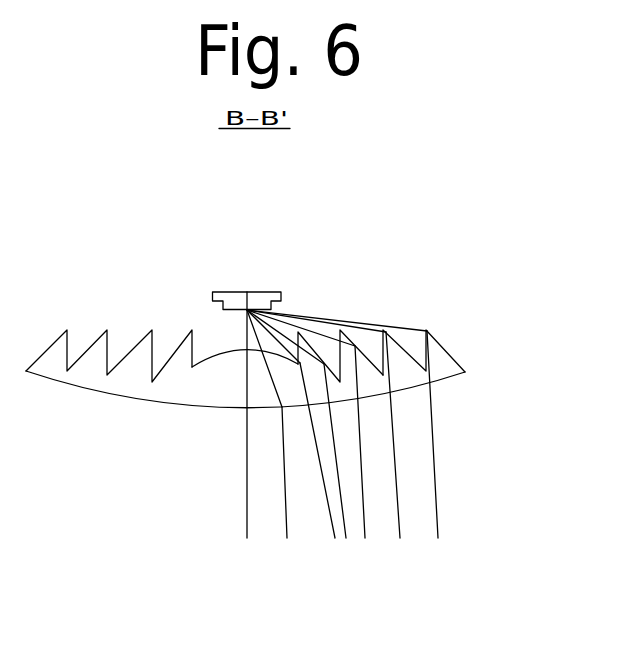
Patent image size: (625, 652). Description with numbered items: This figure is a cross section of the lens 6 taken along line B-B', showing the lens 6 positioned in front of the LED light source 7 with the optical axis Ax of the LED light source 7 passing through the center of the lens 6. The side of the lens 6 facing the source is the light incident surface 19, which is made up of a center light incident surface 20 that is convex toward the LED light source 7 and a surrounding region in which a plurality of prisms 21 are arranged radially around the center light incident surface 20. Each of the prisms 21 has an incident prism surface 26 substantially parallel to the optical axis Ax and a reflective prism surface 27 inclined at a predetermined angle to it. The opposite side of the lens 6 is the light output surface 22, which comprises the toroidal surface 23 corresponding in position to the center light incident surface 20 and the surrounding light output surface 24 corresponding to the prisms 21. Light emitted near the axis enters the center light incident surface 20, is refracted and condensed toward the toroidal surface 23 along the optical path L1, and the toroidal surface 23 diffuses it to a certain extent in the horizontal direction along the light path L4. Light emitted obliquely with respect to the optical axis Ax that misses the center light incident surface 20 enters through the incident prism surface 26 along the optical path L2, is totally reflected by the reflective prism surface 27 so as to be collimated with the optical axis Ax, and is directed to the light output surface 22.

The lens 6 is at (446, 304).
The LED light source 7 is at (252, 296).
The light incident surface 19 is at (373, 270).
The center light incident surface 20 is at (217, 355).
The prisms 21 is at (140, 357).
The light output surface 22 is at (113, 490).
The toroidal surface 23 is at (232, 408).
The surrounding light output surface 24 is at (80, 390).
The incident prism surface 26 is at (330, 376).
The reflective prism surface 27 is at (388, 370).
The optical path L1 is at (280, 384).
The optical path L2 is at (325, 383).
The light path L4 is at (317, 455).
The optical axis Ax is at (243, 502).